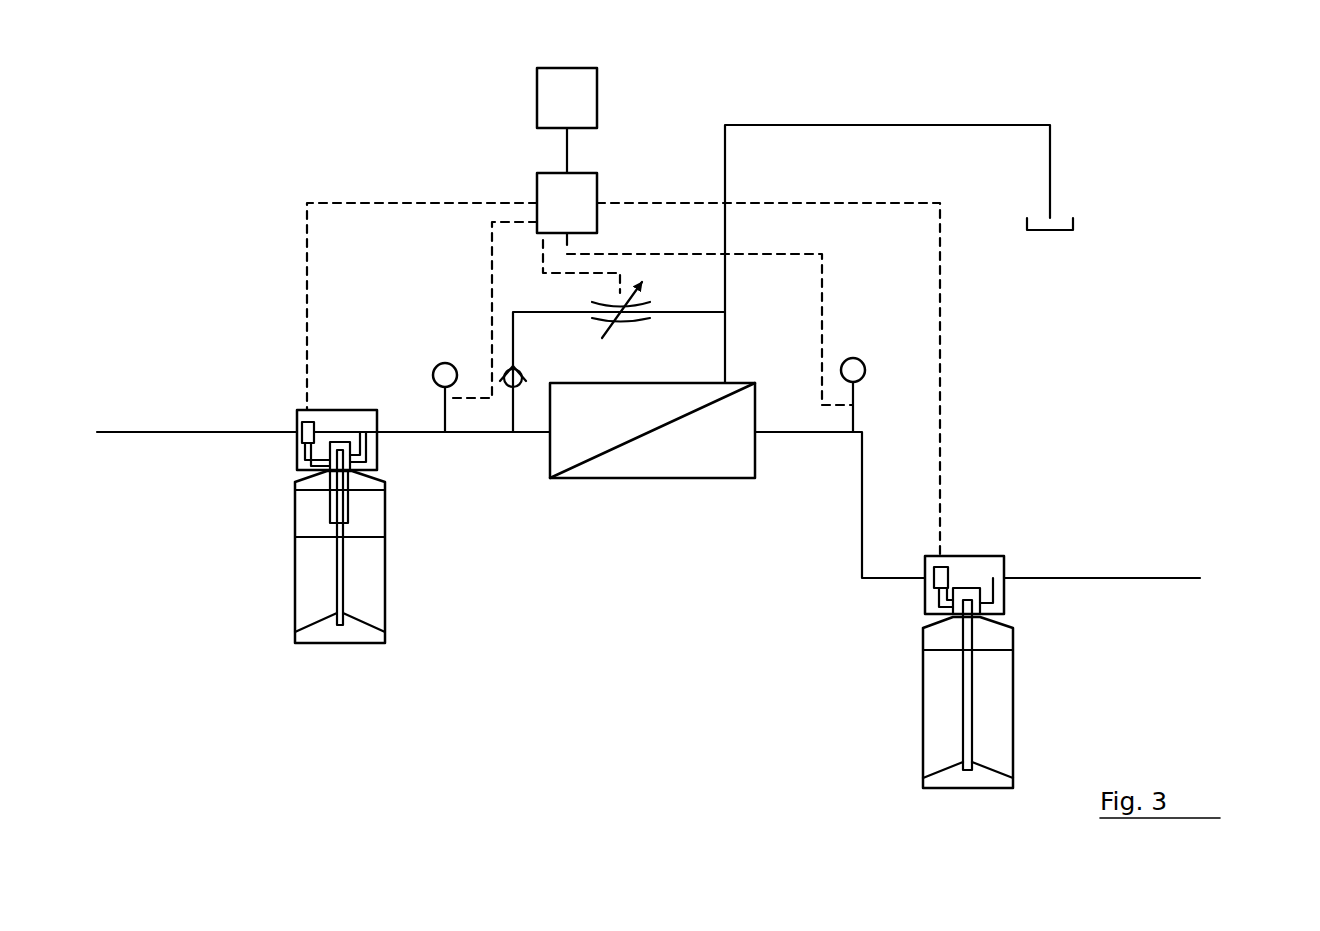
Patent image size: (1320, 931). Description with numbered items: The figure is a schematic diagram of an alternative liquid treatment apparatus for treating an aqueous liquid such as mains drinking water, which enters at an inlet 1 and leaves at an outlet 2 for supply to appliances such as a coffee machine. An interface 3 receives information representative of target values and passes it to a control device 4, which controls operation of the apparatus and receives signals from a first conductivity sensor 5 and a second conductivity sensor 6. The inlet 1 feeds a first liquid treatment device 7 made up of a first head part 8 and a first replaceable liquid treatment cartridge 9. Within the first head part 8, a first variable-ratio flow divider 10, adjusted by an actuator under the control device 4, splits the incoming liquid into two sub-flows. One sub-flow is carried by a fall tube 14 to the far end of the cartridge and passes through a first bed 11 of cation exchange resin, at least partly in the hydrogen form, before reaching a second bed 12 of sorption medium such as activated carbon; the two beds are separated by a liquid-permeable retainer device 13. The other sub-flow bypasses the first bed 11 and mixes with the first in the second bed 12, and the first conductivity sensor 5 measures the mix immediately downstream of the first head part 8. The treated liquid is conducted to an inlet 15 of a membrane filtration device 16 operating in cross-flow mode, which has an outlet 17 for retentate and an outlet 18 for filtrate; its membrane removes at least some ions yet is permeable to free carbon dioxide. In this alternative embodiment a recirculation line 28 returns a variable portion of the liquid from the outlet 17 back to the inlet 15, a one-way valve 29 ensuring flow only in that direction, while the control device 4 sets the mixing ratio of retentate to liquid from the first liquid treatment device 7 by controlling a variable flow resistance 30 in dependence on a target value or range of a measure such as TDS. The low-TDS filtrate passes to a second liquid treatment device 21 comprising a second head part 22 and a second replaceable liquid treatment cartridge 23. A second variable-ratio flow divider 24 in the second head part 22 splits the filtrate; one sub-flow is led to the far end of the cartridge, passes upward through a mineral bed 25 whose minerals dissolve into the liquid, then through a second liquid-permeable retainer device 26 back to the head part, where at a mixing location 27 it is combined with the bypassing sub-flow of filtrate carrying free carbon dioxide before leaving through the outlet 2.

The inlet 1 is at (100, 432).
The outlet 2 is at (1198, 578).
The interface 3 is at (585, 80).
The control device 4 is at (585, 186).
The first conductivity sensor 5 is at (447, 373).
The second conductivity sensor 6 is at (856, 368).
The first liquid treatment device 7 is at (364, 490).
The first head part 8 is at (336, 418).
The first replaceable liquid treatment cartridge 9 is at (386, 541).
The first variable-ratio flow divider 10 is at (297, 420).
The first bed of liquid treatment medium 11 is at (370, 598).
The second bed of liquid treatment medium 12 is at (365, 525).
The liquid-permeable retainer device 13 is at (385, 537).
The fall tube 14 is at (343, 565).
The inlet 15 is at (553, 428).
The membrane filtration device 16 is at (652, 409).
The outlet for retentate 17 is at (727, 383).
The outlet for filtrate 18 is at (760, 432).
The second liquid treatment device 21 is at (999, 633).
The second head part 22 is at (993, 564).
The second replaceable liquid treatment cartridge 23 is at (1013, 685).
The second variable-ratio flow divider 24 is at (934, 574).
The mineral bed 25 is at (995, 690).
The second liquid-permeable retainer device 26 is at (995, 650).
The mixing location 27 is at (990, 578).
The recirculation line 28 is at (540, 312).
The one-way valve 29 is at (524, 370).
The variable flow resistance 30 is at (638, 302).